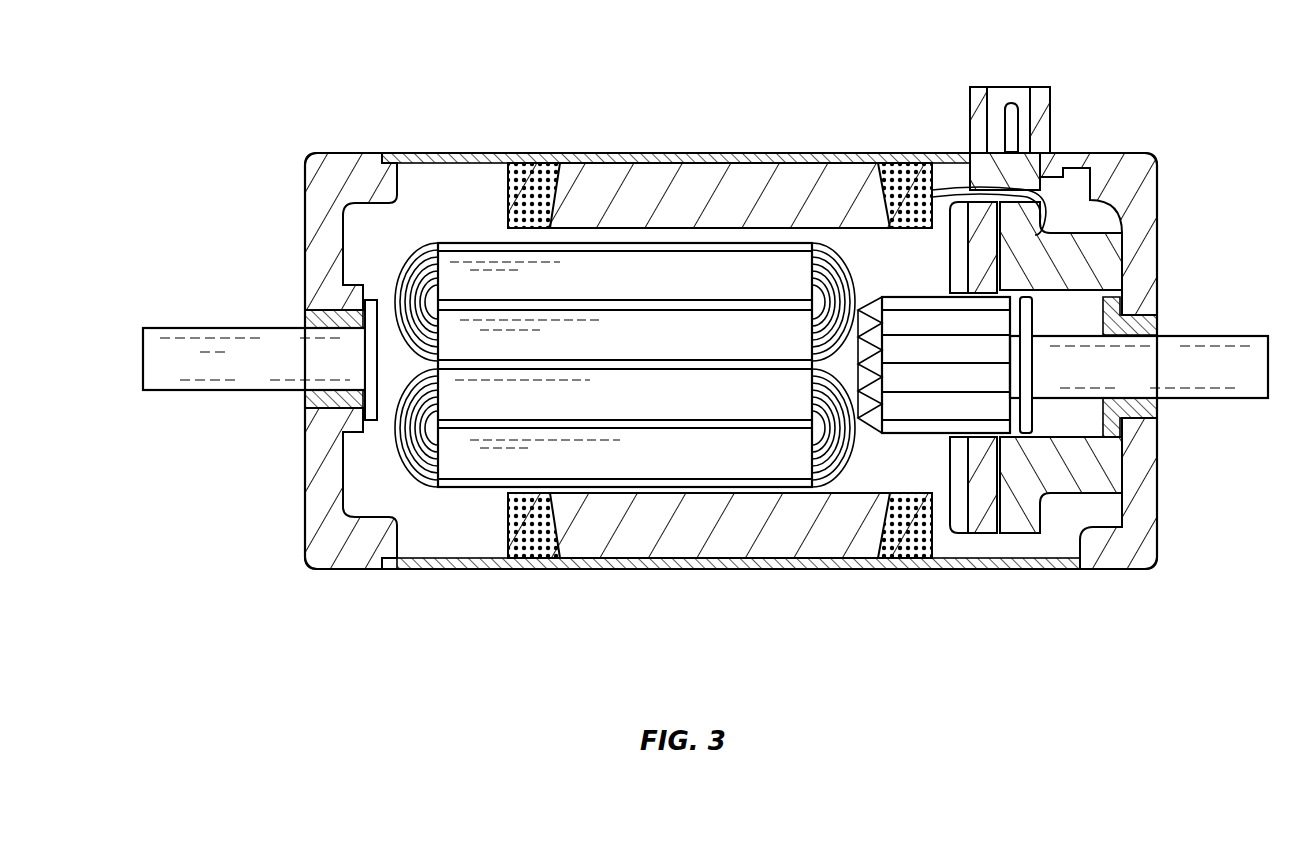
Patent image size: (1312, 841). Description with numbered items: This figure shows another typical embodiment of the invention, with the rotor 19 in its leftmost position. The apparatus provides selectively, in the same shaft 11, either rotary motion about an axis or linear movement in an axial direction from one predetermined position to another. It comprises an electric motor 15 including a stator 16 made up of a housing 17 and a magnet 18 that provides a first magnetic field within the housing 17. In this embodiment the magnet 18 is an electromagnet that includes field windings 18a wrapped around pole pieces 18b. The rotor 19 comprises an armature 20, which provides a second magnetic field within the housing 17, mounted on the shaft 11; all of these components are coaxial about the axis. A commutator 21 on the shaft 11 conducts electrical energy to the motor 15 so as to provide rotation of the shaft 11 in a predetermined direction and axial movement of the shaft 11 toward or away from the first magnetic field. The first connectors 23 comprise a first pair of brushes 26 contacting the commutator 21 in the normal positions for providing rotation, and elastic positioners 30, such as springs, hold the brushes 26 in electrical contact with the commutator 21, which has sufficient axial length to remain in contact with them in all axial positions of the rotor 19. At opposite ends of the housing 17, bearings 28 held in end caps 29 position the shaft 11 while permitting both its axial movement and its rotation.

The shaft 11 is at (197, 350).
The electric motor 15 is at (760, 93).
The stator 16 is at (500, 170).
The housing 17 is at (545, 160).
The magnet 18 is at (675, 364).
The field windings 18a is at (507, 190).
The pole pieces 18b is at (720, 360).
The rotor 19 is at (400, 460).
The armature 20 is at (625, 365).
The commutator 21 is at (957, 365).
The first connectors 23 is at (942, 250).
The first pair of brushes 26 is at (952, 280).
The bearings 28 is at (305, 313).
The end caps 29 is at (322, 204).
The elastic positioners 30 is at (985, 236).